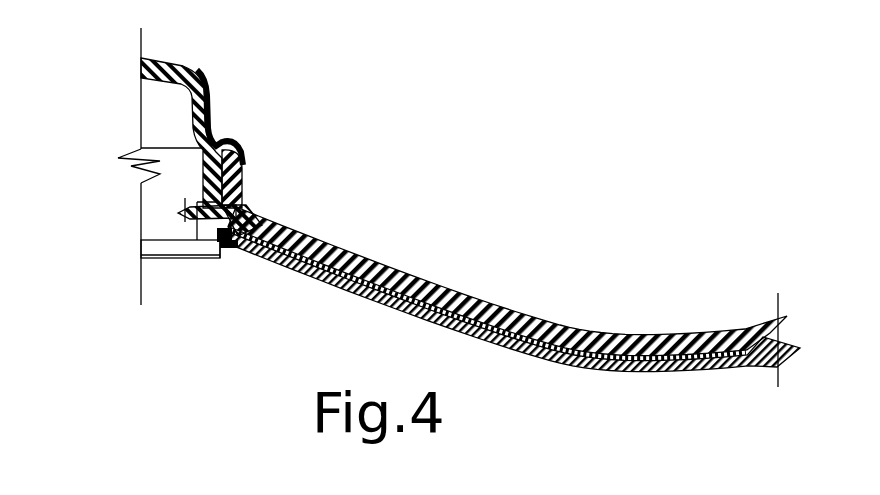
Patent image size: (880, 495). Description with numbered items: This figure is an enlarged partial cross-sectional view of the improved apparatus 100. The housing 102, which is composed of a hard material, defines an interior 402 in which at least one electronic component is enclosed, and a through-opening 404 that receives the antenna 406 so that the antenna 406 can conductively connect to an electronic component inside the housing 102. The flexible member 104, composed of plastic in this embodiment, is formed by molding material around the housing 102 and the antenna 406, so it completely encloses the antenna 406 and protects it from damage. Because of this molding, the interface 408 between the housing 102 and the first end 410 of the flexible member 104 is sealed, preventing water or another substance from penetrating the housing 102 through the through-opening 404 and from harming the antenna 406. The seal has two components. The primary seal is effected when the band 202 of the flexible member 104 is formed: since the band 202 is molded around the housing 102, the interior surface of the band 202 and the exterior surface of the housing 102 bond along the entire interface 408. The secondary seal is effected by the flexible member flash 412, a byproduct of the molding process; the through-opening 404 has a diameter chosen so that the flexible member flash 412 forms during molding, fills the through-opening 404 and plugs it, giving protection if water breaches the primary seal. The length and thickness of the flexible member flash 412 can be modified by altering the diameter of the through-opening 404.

The improved apparatus 100 is at (410, 170).
The housing 102 is at (214, 131).
The flexible member 104 is at (465, 308).
The band 202 is at (246, 167).
The interior 402 is at (133, 168).
The through-opening 404 is at (204, 199).
The antenna 406 is at (200, 245).
The interface 408 is at (228, 138).
The first end 410 is at (238, 201).
The flexible member flash 412 is at (205, 243).